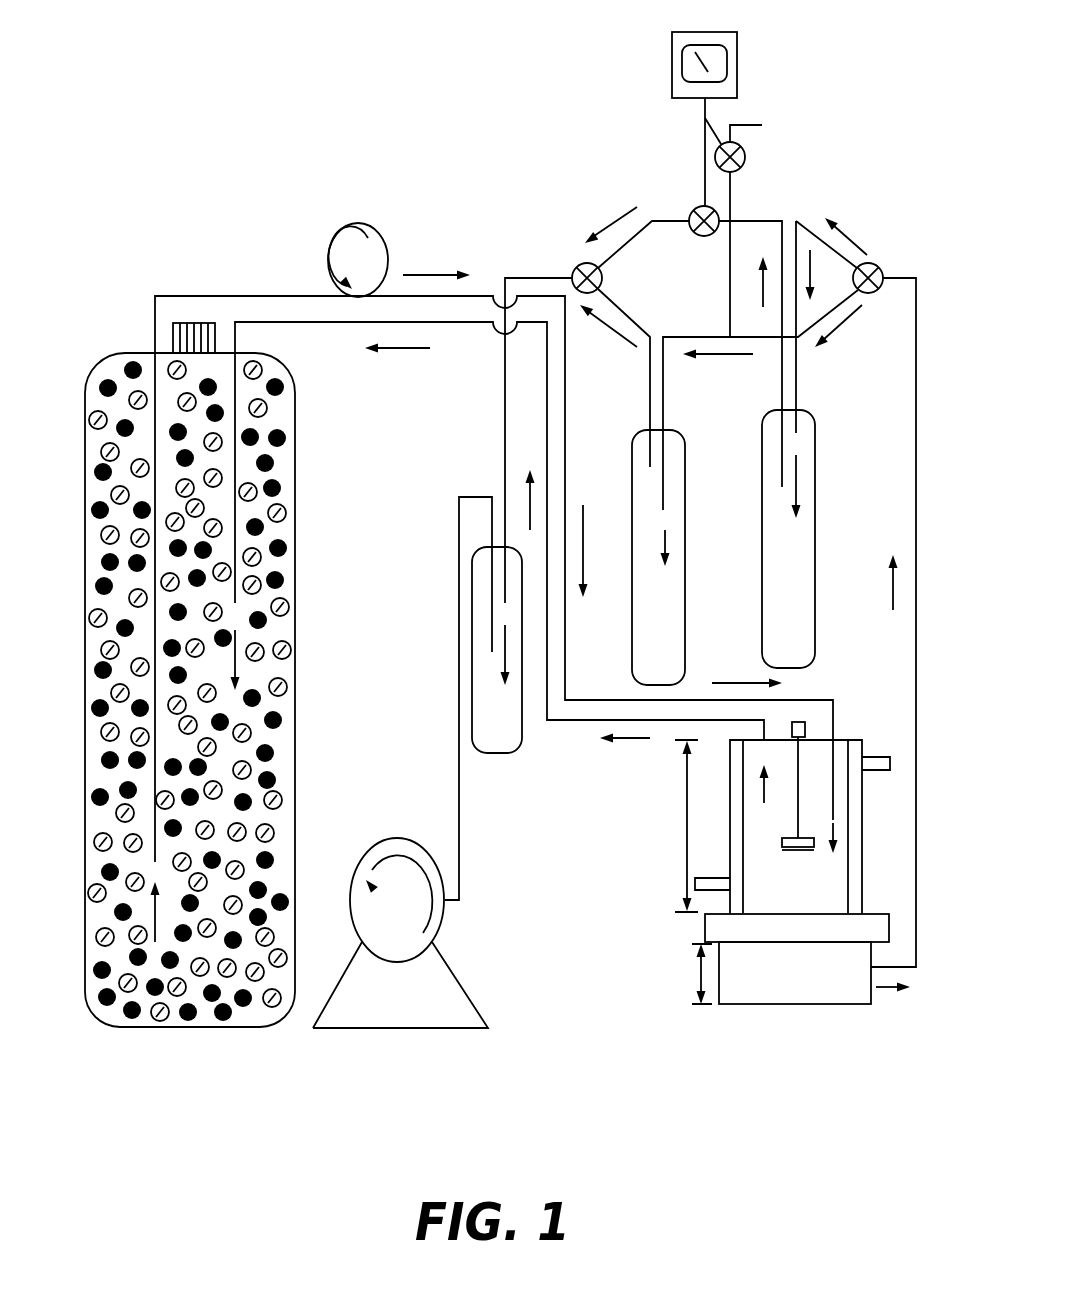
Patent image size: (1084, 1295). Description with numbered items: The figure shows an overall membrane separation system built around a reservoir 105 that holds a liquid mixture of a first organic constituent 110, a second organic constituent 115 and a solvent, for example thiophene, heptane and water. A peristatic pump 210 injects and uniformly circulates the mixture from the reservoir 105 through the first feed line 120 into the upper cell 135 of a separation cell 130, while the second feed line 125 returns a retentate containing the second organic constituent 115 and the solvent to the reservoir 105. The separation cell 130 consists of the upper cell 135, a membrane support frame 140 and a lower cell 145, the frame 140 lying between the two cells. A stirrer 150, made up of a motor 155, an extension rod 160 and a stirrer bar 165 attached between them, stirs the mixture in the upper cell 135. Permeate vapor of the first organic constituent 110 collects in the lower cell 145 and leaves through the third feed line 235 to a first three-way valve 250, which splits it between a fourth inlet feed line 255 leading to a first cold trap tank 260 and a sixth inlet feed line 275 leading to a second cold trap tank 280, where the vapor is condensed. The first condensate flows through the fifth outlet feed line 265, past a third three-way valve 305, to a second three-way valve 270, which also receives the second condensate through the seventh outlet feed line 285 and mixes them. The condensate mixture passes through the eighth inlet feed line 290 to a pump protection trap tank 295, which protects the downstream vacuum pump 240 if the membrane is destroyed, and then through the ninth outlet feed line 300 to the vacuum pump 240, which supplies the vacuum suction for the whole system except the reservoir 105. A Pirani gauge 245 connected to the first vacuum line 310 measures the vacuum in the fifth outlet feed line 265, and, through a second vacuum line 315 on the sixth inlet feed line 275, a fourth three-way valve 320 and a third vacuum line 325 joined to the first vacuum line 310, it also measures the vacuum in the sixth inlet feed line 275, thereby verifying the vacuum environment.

The reservoir 105 is at (81, 468).
The first organic constituent 110 is at (280, 746).
The second organic constituent 115 is at (288, 677).
The first feed line 120 is at (150, 305).
The second feed line 125 is at (312, 350).
The separation cell 130 is at (636, 831).
The upper cell 135 is at (680, 858).
The membrane support frame 140 is at (702, 928).
The lower cell 145 is at (702, 978).
The stirrer 150 is at (818, 810).
The motor 155 is at (806, 716).
The extension rod 160 is at (805, 767).
The stirrer bar 165 is at (807, 862).
The peristatic pump 210 is at (337, 222).
The third feed line 235 is at (918, 988).
The vacuum pump 240 is at (387, 1046).
The Pirani gauge 245 is at (667, 52).
The first three-way valve 250 is at (888, 262).
The fourth inlet feed line 255 is at (812, 216).
The first cold trap tank 260 is at (822, 500).
The fifth outlet feed line 265 is at (648, 212).
The second three-way valve 270 is at (573, 262).
The sixth inlet feed line 275 is at (812, 364).
The second cold trap tank 280 is at (620, 436).
The seventh outlet feed line 285 is at (644, 312).
The eighth inlet feed line 290 is at (495, 407).
The pump protection trap tank 295 is at (527, 720).
The ninth outlet feed line 300 is at (458, 568).
The third three-way valve 305 is at (690, 208).
The first vacuum line 310 is at (695, 133).
The second vacuum line 315 is at (745, 258).
The fourth three-way valve 320 is at (750, 152).
The third vacuum line 325 is at (716, 120).